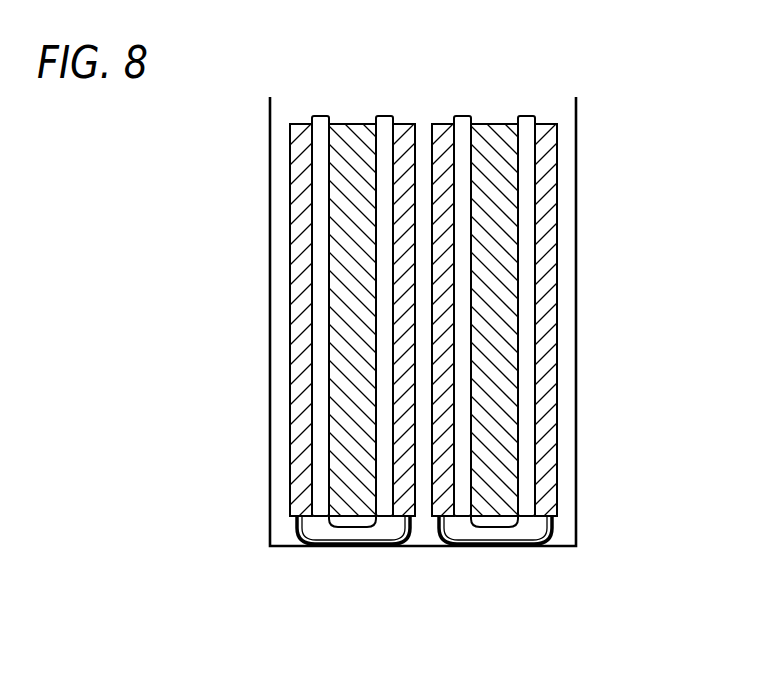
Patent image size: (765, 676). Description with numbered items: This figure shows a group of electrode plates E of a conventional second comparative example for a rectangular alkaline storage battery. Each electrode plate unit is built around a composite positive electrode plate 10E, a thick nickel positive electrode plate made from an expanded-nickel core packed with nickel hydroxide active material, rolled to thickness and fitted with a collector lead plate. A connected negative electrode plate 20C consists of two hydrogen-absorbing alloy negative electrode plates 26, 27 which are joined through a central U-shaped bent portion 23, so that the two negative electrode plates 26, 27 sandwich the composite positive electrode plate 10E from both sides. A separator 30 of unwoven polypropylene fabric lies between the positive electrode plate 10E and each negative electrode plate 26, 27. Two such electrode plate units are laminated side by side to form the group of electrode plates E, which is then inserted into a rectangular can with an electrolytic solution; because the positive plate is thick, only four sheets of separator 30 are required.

The group of electrode plates E is at (428, 70).
The composite positive electrode plate 10E is at (350, 127).
The connected negative electrode plate 20C is at (268, 131).
The separator 30 is at (386, 312).
The negative electrode plate 26 is at (393, 547).
The negative electrode plate 27 is at (297, 544).
The U-shaped bent portion 23 is at (318, 547).